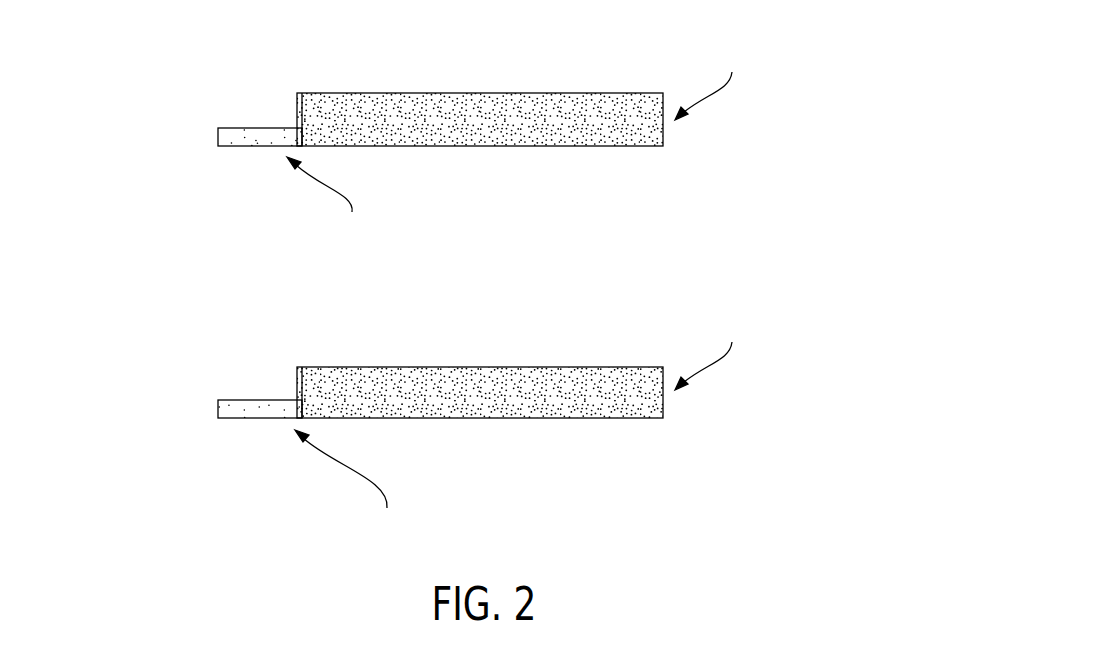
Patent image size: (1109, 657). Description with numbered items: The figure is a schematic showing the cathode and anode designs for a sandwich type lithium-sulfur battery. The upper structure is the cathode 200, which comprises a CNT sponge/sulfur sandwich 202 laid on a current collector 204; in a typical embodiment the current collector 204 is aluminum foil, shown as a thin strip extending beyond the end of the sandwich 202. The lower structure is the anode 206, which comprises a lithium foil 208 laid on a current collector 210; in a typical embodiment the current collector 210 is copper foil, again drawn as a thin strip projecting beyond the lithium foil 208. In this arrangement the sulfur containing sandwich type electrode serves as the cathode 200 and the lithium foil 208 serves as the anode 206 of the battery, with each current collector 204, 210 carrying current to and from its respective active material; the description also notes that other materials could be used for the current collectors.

The cathode 200 is at (484, 127).
The CNT sponge/sulfur sandwich 202 is at (530, 147).
The current collector 204 is at (233, 128).
The anode 206 is at (483, 414).
The lithium foil 208 is at (528, 418).
The current collector 210 is at (233, 400).